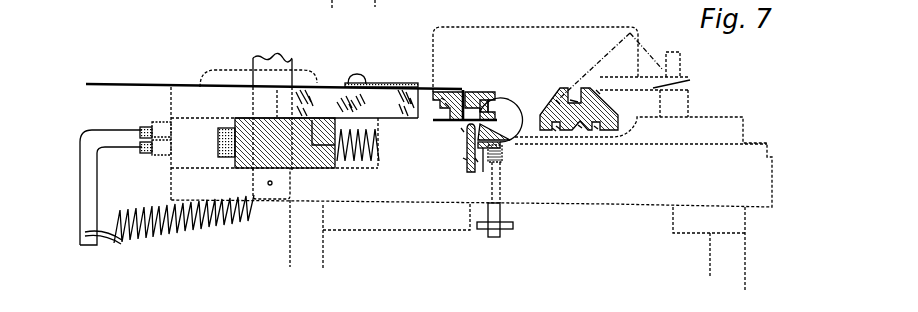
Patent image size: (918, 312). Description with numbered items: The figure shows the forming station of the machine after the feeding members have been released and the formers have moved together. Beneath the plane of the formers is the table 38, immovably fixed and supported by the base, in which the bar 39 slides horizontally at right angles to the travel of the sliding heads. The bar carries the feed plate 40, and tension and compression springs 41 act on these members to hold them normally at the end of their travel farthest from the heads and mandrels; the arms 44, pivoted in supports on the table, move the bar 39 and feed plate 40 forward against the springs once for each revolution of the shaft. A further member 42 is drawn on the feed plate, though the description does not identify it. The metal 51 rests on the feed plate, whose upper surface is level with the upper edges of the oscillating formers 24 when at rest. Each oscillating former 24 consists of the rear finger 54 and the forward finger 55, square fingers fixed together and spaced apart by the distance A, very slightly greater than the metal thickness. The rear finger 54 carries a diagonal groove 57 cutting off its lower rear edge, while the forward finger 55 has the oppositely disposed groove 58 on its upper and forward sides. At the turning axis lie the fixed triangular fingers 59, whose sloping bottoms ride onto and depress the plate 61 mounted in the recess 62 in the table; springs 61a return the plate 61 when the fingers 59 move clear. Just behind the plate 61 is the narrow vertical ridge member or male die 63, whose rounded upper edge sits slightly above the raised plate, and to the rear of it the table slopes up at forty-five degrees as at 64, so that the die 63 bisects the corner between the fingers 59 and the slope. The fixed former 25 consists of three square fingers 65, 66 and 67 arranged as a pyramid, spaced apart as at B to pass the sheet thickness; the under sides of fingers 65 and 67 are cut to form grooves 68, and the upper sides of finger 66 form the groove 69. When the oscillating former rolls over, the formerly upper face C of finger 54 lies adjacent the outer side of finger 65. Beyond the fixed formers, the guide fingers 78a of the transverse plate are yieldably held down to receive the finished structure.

The oscillating mandrel or former 24 is at (535, 74).
The fixed mandrel or former 25 is at (601, 81).
The table 38 is at (471, 203).
The bar 39 is at (255, 152).
The feed plate 40 is at (330, 100).
The tension and compression springs 41 is at (340, 150).
The strip 42 is at (383, 84).
The arms 44 is at (260, 62).
The metal 51 is at (155, 86).
The rear finger 54 is at (445, 97).
The forward finger 55 is at (400, 148).
The groove 57 is at (447, 104).
The groove 58 is at (482, 110).
The fixed triangular fingers 59 is at (493, 124).
The plate 61 is at (507, 134).
The springs 61a is at (500, 153).
The depression or recess 62 is at (486, 172).
The ridge member or male die 63 is at (478, 160).
The sloping portion of the table 64 is at (465, 158).
The finger 65 is at (553, 131).
The finger 66 is at (597, 92).
The finger 67 is at (583, 128).
The grooves 68 is at (558, 128).
The groove 69 is at (580, 99).
The guide fingers 78a is at (693, 78).
The spacing between fingers A is at (463, 130).
The spacing between fixed-former fingers B is at (558, 102).
The formerly upper face of finger C is at (418, 131).